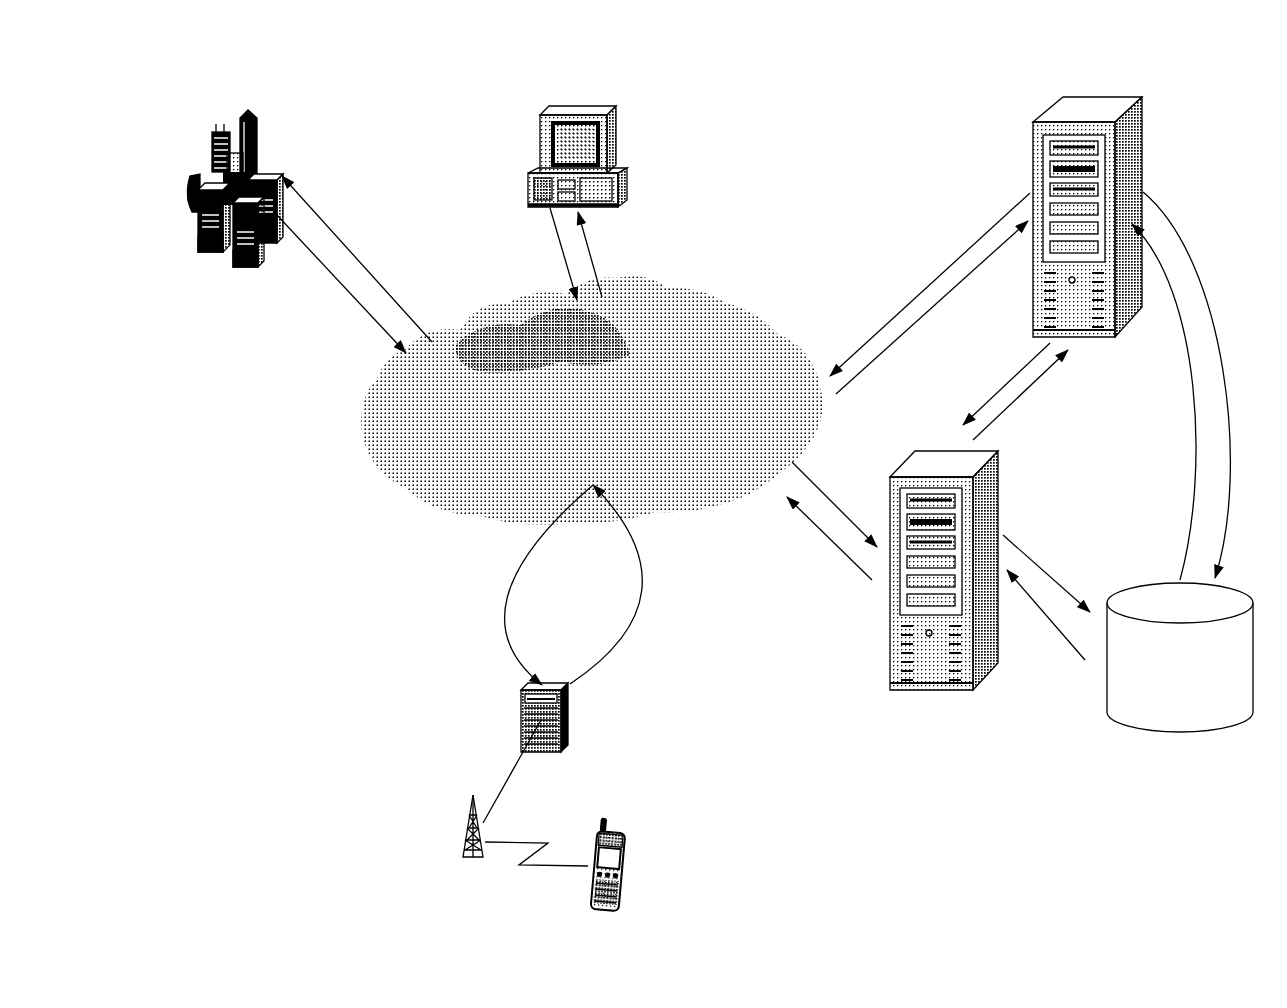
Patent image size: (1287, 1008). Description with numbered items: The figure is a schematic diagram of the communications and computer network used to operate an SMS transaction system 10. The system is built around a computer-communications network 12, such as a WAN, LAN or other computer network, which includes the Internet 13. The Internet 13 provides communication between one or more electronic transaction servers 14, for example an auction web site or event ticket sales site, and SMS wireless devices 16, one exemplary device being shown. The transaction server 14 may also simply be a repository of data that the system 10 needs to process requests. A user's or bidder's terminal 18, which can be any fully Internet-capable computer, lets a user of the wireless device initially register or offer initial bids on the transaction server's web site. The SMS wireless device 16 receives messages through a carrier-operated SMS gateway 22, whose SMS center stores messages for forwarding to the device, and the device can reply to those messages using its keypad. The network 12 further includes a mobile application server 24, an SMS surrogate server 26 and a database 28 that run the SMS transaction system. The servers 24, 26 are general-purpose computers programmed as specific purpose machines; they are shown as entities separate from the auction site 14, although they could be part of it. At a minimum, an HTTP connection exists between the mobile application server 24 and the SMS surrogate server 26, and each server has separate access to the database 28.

The SMS transaction system 10 is at (791, 180).
The computer-communications network 12 is at (906, 300).
The Internet 13 is at (443, 508).
The electronic transaction server 14 is at (262, 152).
The SMS wireless device 16 is at (624, 840).
The user's or bidder's terminal 18 is at (618, 122).
The SMS gateway 22 is at (567, 712).
The mobile application server 24 is at (1152, 154).
The SMS surrogate server 26 is at (888, 662).
The database 28 is at (1174, 724).